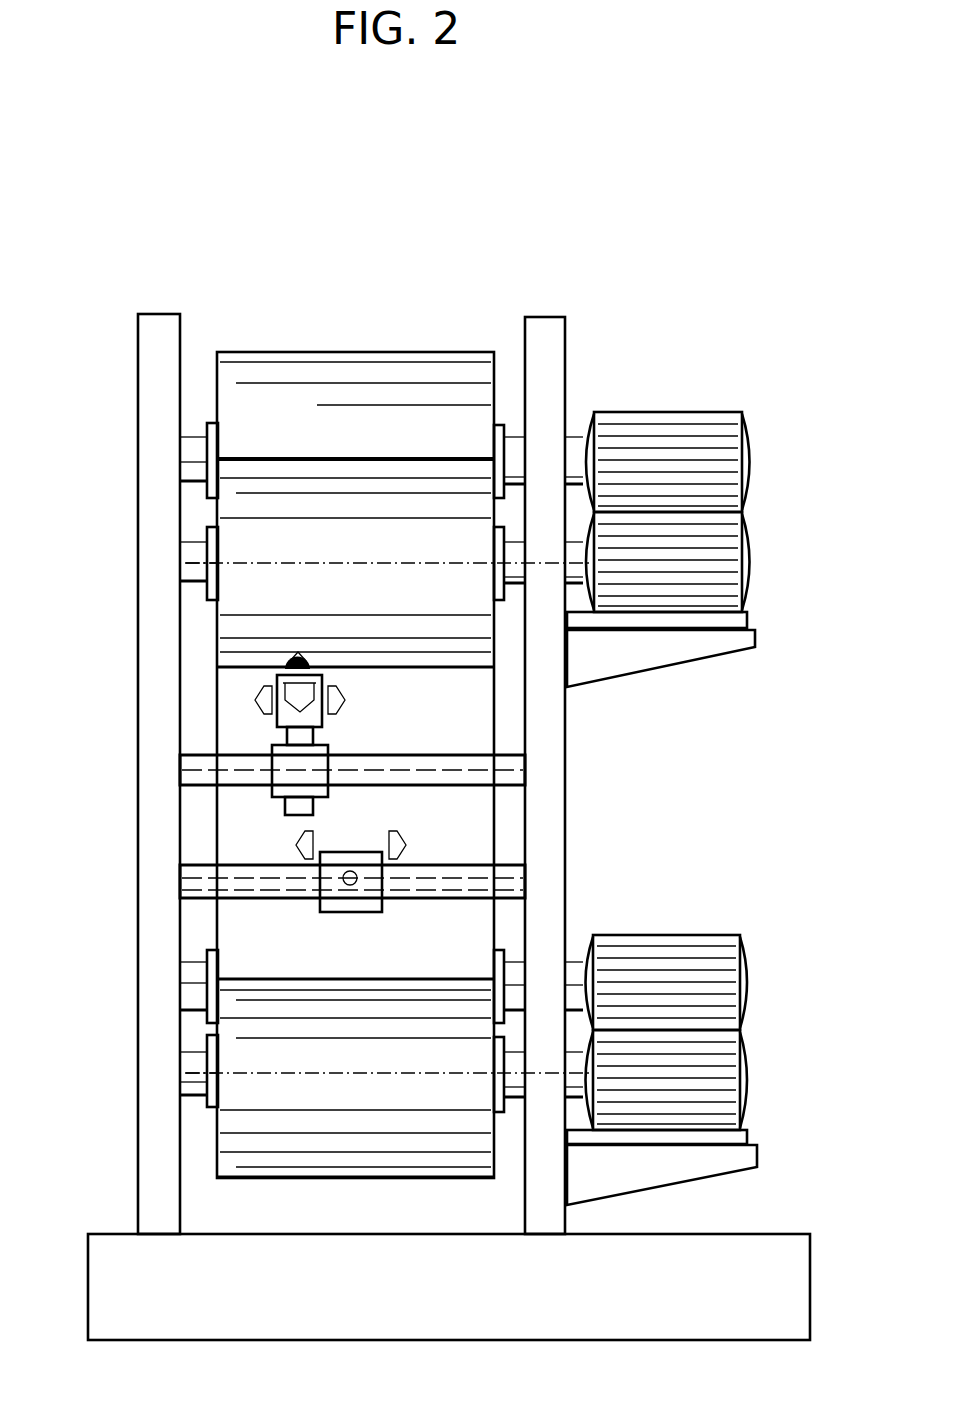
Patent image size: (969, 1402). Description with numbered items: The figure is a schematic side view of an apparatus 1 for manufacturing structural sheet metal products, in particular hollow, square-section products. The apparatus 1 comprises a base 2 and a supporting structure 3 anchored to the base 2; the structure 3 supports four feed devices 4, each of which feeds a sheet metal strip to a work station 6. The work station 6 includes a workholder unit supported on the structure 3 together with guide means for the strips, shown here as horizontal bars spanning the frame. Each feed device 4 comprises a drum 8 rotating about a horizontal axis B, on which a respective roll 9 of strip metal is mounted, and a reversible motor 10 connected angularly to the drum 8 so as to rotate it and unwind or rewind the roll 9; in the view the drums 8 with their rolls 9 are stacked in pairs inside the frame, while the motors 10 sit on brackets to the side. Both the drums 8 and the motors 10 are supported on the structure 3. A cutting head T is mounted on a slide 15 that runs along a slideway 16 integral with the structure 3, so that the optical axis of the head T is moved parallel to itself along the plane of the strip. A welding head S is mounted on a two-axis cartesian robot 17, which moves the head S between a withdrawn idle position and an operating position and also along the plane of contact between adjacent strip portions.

The apparatus 1 is at (134, 232).
The base 2 is at (786, 1254).
The supporting structure 3 is at (549, 314).
The feed device 4 is at (579, 408).
The work station 6 is at (503, 749).
The drum 8 is at (500, 428).
The roll of strip metal 9 is at (328, 395).
The reversible motor 10 is at (694, 430).
The slide 15 is at (340, 902).
The slideway 16 is at (435, 890).
The two-axis cartesian robot 17 is at (336, 750).
The horizontal axis B is at (260, 565).
The welding head S is at (317, 720).
The cutting head T is at (352, 860).